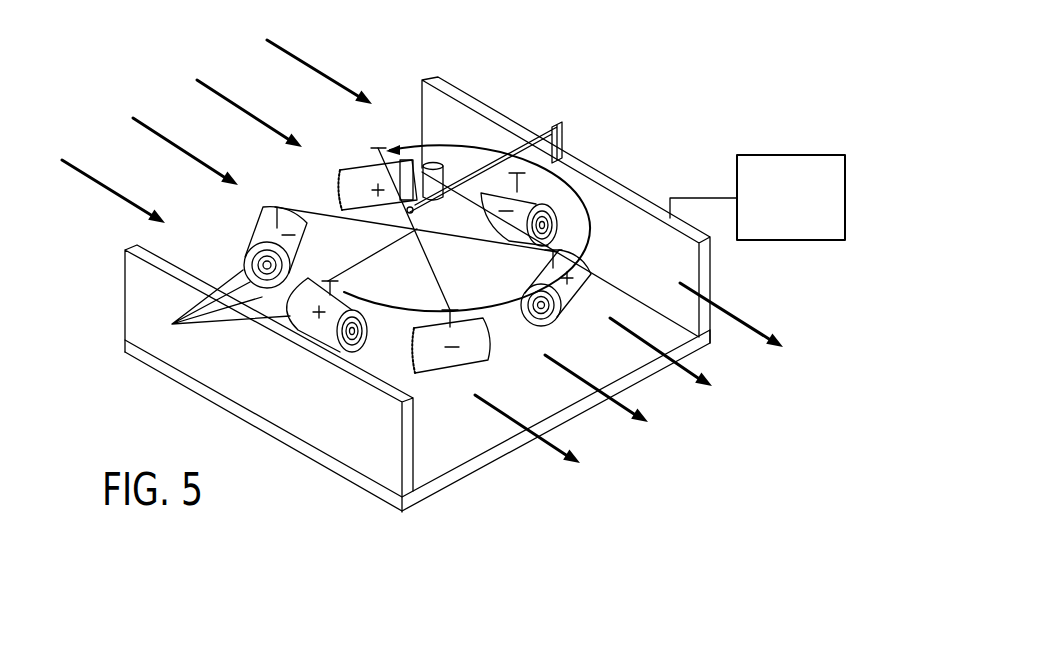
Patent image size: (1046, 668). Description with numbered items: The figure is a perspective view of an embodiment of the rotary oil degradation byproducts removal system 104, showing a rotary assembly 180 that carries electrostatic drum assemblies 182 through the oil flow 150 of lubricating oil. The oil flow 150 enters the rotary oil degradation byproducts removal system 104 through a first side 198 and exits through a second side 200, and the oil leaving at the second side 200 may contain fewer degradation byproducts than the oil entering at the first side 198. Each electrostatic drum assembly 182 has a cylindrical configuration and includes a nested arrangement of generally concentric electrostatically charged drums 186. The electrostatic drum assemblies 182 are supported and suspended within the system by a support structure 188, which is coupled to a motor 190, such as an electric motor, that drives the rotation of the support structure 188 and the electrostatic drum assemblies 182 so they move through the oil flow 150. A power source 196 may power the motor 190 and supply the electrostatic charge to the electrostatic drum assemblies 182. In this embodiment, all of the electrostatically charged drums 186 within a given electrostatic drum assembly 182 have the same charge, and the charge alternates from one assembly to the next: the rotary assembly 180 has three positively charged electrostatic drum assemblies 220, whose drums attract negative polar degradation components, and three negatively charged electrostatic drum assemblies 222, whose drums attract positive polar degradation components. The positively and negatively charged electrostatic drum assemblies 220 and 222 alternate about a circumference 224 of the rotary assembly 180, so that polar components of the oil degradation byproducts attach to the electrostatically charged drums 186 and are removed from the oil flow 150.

The rotary oil degradation byproducts removal system 104 is at (734, 80).
The oil flow 150 is at (277, 49).
The rotary assembly 180 is at (438, 130).
The electrostatic drum assemblies 182 is at (297, 436).
The electrostatically charged drums 186 is at (212, 306).
The support structure 188 is at (432, 283).
The motor 190 is at (463, 195).
The power source 196 is at (787, 243).
The first side 198 is at (114, 234).
The second side 200 is at (465, 462).
The positively charged electrostatic drum assemblies 220 is at (348, 172).
The negatively charged electrostatic drum assemblies 222 is at (264, 230).
The circumference 224 is at (492, 302).